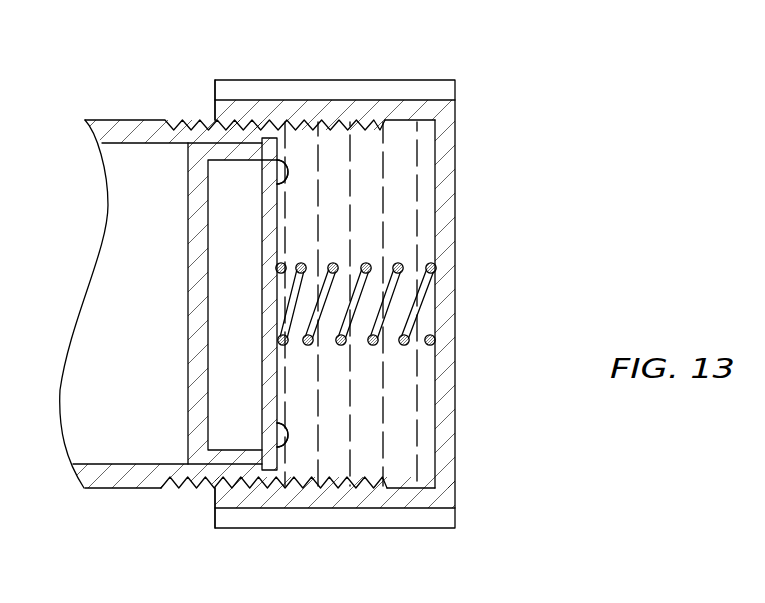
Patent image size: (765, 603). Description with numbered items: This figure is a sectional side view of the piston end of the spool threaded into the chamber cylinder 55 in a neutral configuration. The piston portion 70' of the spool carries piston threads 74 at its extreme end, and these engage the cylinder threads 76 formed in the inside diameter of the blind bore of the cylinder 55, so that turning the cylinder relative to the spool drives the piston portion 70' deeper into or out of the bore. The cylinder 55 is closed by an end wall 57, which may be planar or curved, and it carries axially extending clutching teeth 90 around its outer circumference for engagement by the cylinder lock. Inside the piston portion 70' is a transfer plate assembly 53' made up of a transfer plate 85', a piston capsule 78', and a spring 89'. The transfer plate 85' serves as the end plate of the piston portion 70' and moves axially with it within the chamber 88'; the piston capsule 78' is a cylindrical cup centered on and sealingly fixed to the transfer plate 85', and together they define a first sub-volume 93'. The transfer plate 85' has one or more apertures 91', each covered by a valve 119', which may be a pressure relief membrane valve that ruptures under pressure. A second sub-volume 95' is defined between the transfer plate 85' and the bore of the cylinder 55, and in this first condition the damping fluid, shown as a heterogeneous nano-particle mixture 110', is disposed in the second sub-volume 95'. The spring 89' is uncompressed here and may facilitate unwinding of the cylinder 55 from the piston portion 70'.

The piston portion 70' is at (157, 280).
The piston threads 74 is at (177, 120).
The cylinder threads 76 is at (329, 120).
The clutching teeth 90 is at (421, 80).
The first sub-volume 93' is at (214, 236).
The apertures 91' is at (150, 309).
The piston capsule 78' is at (101, 303).
The transfer plate assembly 53' is at (98, 288).
The transfer plate 85' is at (189, 304).
The valve 119' is at (416, 302).
The heterogeneous mixture 110' is at (417, 304).
The spring 89' is at (416, 290).
The end wall 57 is at (457, 405).
The chamber cylinder 55 is at (214, 492).
The chamber 88' is at (274, 525).
The second sub-volume 95' is at (410, 347).